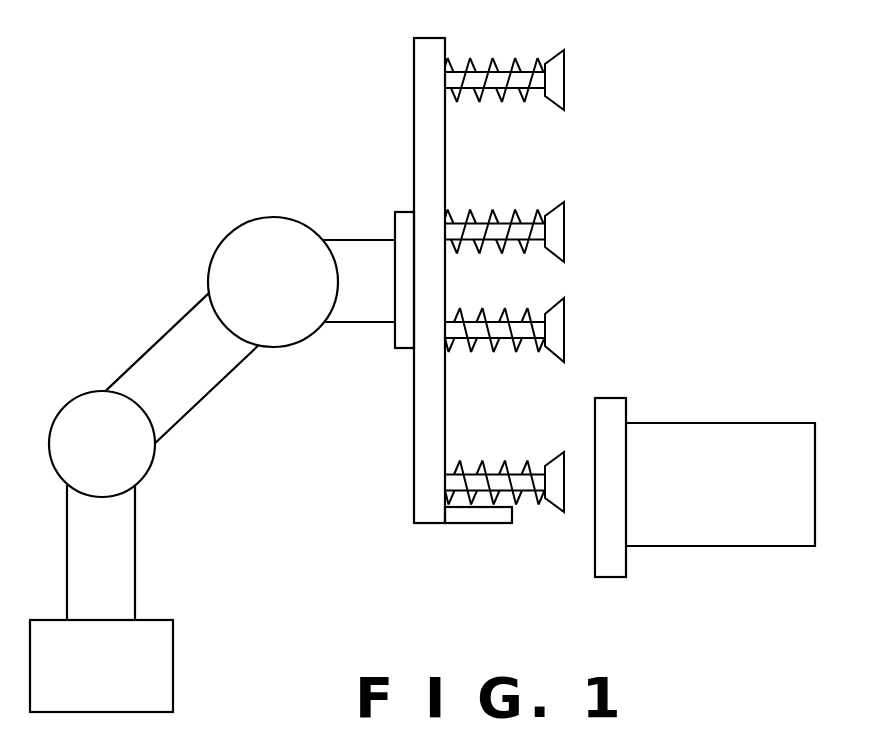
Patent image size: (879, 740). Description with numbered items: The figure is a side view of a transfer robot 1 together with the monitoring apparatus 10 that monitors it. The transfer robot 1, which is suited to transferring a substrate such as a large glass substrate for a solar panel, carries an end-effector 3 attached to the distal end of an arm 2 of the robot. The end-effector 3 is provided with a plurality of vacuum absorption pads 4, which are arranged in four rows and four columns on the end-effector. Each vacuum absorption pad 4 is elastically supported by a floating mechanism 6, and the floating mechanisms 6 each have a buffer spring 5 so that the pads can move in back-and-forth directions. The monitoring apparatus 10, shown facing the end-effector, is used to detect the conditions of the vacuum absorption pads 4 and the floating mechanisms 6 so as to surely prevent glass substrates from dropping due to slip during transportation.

The transfer robot 1 is at (183, 248).
The arm 2 is at (198, 383).
The end-effector 3 is at (412, 112).
The vacuum absorption pad 4 is at (563, 78).
The buffer spring 5 is at (480, 87).
The floating mechanism 6 is at (503, 65).
The monitoring apparatus 10 is at (708, 422).